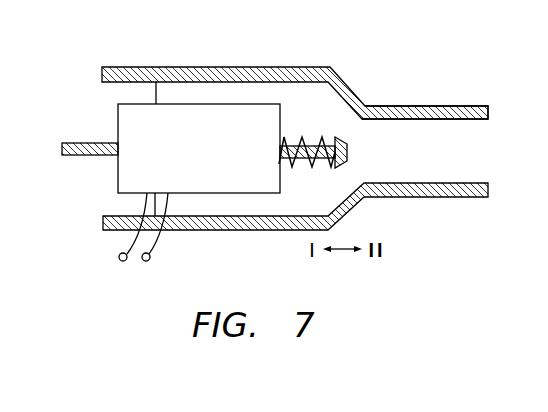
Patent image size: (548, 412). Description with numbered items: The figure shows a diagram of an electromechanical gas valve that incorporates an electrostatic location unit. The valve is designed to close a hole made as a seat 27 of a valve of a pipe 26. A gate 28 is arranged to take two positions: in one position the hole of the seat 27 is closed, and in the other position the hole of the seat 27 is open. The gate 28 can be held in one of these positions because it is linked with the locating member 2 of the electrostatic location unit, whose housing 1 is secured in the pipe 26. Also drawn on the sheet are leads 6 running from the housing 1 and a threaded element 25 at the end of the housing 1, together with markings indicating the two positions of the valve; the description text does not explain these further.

The housing 1 is at (212, 122).
The locating member 2 is at (84, 133).
The lead wires 6 is at (133, 233).
The screw 25 is at (298, 134).
The pipe 26 is at (425, 107).
The seat 27 is at (345, 88).
The gate 28 is at (367, 153).